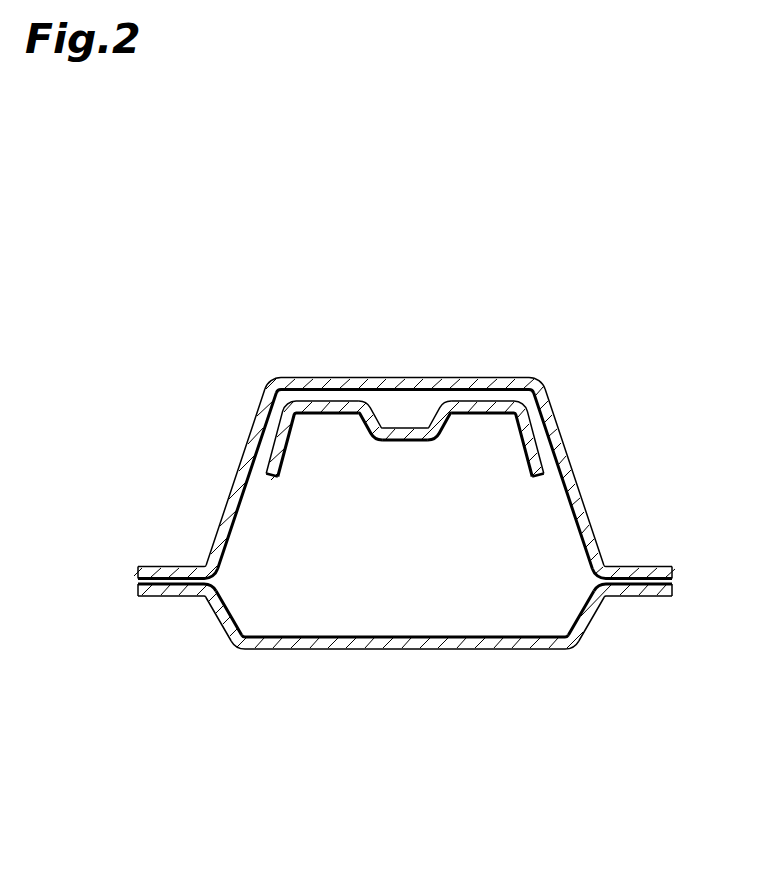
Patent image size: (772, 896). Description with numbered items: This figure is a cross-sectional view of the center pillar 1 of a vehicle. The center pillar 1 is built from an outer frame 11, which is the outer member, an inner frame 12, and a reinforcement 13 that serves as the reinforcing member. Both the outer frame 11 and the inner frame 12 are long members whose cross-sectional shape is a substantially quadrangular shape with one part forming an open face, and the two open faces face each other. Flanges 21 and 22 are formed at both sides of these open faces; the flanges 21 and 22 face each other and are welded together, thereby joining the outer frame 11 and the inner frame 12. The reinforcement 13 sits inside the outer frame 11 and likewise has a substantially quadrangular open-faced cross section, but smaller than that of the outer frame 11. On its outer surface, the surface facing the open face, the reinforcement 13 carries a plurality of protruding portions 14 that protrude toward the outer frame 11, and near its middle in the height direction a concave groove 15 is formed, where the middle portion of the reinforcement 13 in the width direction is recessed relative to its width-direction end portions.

The center pillar 1 is at (582, 368).
The outer frame 11 is at (403, 377).
The inner frame 12 is at (420, 650).
The reinforcement 13 is at (418, 451).
The protruding portions 14 is at (324, 400).
The concave groove 15 is at (404, 430).
The flange 21 is at (172, 568).
The flange 22 is at (168, 594).